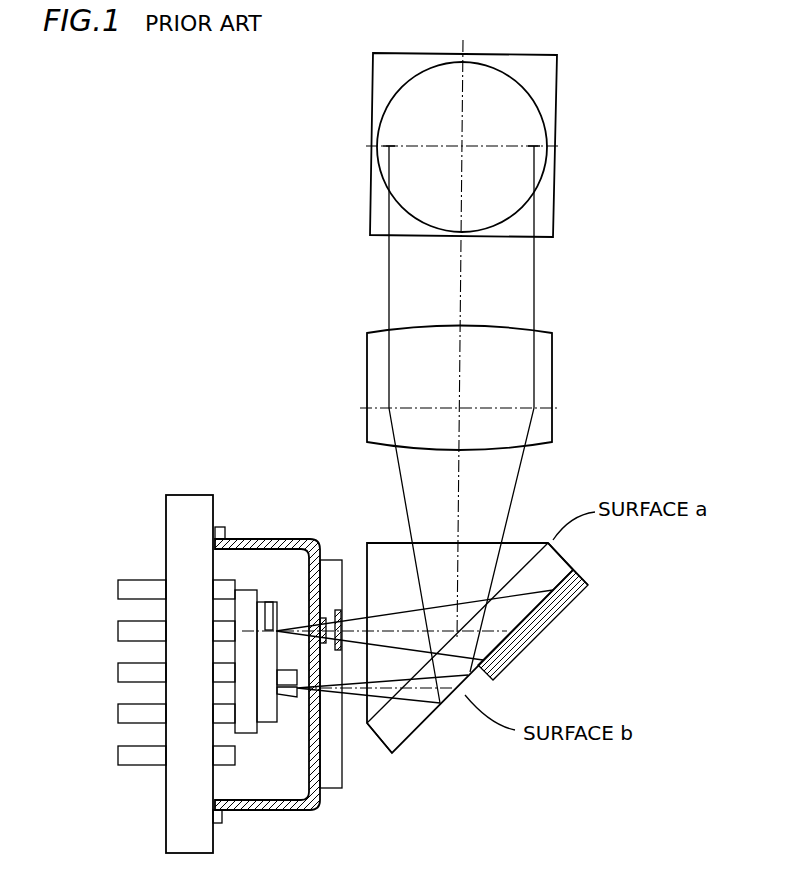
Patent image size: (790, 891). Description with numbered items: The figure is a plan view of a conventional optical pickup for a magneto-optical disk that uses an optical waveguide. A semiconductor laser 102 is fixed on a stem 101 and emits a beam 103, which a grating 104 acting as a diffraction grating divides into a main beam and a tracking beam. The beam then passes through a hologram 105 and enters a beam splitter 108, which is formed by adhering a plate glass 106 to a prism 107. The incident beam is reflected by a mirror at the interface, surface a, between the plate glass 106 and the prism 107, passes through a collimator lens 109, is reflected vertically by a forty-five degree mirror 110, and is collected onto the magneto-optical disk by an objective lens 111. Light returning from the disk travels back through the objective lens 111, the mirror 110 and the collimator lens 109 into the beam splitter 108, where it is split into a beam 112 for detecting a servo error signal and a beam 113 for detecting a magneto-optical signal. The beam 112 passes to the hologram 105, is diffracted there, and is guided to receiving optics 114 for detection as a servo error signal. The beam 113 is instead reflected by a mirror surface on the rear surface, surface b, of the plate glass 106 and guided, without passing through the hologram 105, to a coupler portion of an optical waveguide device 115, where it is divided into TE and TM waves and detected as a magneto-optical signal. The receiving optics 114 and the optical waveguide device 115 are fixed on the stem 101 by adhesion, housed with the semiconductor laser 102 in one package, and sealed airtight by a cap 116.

The stem 101 is at (163, 798).
The semiconductor laser 102 is at (247, 630).
The beam 103 is at (267, 615).
The grating 104 is at (327, 618).
The hologram 105 is at (338, 620).
The plate glass 106 is at (555, 565).
The prism 107 is at (520, 548).
The beam splitter 108 is at (413, 715).
The collimator lens 109 is at (552, 368).
The 45° mirror 110 is at (540, 72).
The objective lens 111 is at (398, 98).
The beam for detecting a servo error signal 112 is at (398, 603).
The beam for detecting a magneto-optical signal 113 is at (405, 705).
The receiving optics 114 is at (265, 697).
The optical waveguide device 115 is at (282, 702).
The cap 116 is at (245, 540).